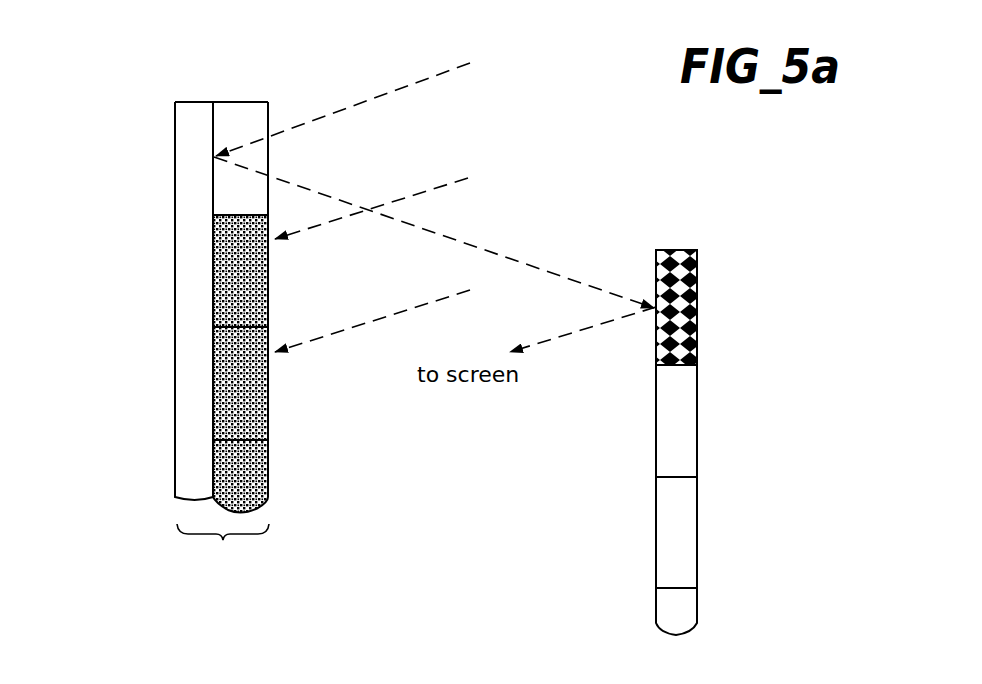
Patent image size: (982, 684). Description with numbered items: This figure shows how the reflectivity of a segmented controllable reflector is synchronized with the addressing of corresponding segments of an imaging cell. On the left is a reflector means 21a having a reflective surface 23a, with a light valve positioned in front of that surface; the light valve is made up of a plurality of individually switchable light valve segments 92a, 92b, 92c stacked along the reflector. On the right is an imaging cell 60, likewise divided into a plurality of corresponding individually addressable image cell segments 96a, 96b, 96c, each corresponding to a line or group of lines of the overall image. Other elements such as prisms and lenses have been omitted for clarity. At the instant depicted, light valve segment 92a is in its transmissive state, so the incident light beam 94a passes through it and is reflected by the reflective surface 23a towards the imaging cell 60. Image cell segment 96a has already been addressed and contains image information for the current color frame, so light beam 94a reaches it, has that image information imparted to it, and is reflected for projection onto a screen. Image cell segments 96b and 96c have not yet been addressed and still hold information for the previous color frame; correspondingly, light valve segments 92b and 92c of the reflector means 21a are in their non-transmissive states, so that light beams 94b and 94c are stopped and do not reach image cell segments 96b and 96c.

The reflective surface 23a is at (185, 87).
The light valve segment 92a is at (228, 190).
The light valve segment 92b is at (213, 296).
The light valve segment 92c is at (213, 417).
The reflector means 21a is at (222, 543).
The incident light beam 94a is at (455, 63).
The light beam 94b is at (455, 178).
The light beam 94c is at (347, 335).
The image cell segment 96a is at (697, 328).
The image cell segment 96b is at (680, 447).
The image cell segment 96c is at (680, 553).
The imaging cell 60 is at (642, 624).